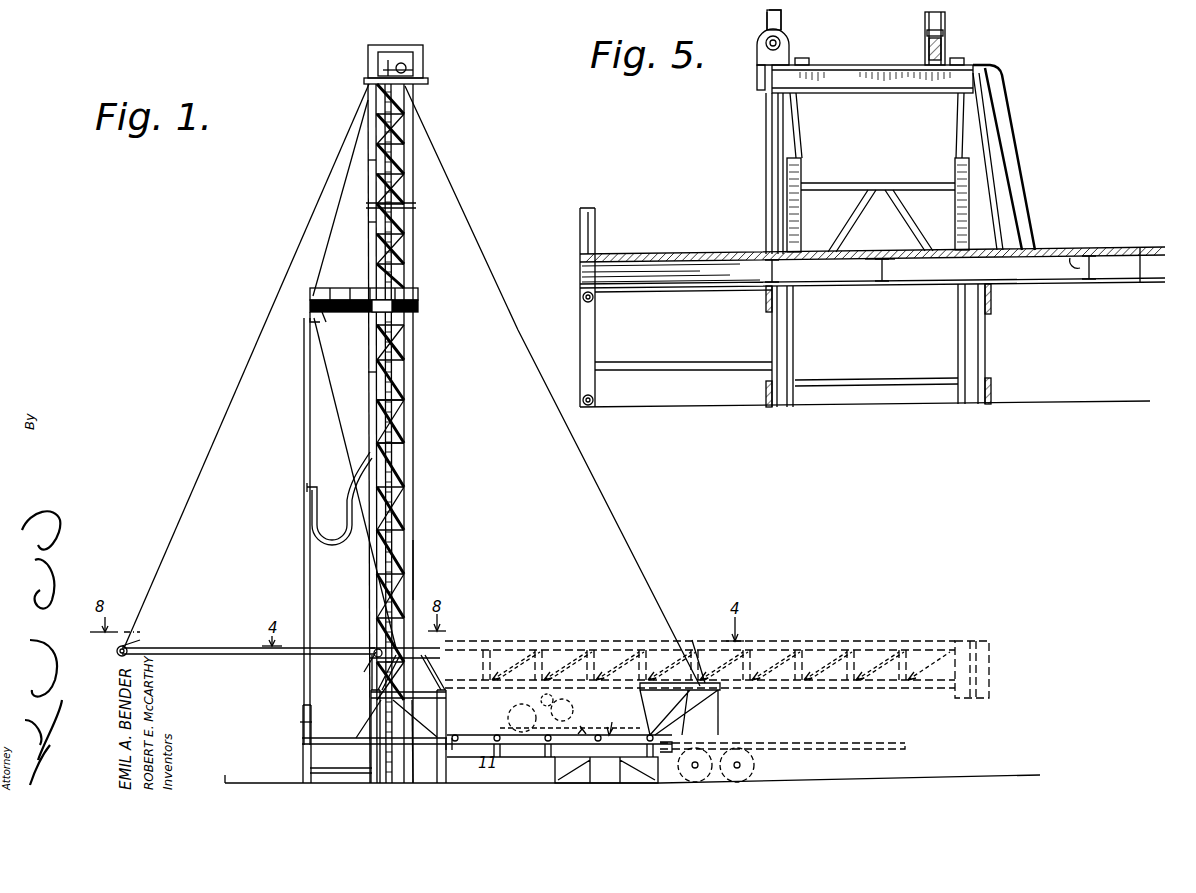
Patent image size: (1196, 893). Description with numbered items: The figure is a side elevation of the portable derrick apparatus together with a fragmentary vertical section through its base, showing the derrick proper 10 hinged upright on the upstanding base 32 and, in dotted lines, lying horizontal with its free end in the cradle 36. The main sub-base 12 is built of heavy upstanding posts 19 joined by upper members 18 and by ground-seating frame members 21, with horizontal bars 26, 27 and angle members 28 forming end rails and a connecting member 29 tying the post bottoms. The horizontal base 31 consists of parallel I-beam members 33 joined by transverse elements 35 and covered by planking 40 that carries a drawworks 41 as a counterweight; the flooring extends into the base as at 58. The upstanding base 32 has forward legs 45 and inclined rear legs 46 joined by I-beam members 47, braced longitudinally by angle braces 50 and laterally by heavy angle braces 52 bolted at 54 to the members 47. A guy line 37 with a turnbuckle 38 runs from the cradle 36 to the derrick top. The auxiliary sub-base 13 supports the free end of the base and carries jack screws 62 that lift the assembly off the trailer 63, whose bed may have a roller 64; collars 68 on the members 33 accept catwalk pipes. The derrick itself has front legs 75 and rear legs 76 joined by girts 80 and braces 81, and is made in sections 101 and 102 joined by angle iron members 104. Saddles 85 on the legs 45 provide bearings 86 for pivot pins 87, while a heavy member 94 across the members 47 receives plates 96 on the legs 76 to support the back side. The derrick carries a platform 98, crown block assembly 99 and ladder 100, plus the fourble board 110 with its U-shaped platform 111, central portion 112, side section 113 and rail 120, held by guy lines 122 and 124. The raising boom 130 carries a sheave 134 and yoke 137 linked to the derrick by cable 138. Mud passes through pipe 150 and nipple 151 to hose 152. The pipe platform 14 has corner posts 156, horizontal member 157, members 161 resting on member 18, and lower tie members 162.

In FIG. 1, the derrick proper 10 is at (428, 466).
In FIG. 1, the main sub-base 12 is at (426, 765).
In FIG. 5, the main sub-base 12 is at (996, 339).
In FIG. 1, the auxiliary sub-base 13 is at (551, 770).
In FIG. 1, the pipe platform 14 is at (345, 731).
In FIG. 5, the pipe platform 14 is at (663, 246).
In FIG. 5, the upper structural members 18 is at (765, 317).
In FIG. 1, the upstanding posts 19 is at (447, 708).
In FIG. 5, the upstanding posts 19 is at (801, 178).
In FIG. 5, the frame members 21 is at (766, 393).
In FIG. 1, the horizontal bar 26 is at (408, 692).
In FIG. 5, the horizontal bar 26 is at (874, 183).
In FIG. 1, the horizontal bar 27 is at (450, 746).
In FIG. 1, the angle members 28 is at (400, 705).
In FIG. 5, the angle members 28 is at (838, 216).
In FIG. 1, the structural connecting member 29 is at (440, 779).
In FIG. 5, the structural connecting member 29 is at (860, 382).
In FIG. 1, the horizontal base structure 31 is at (617, 720).
In FIG. 5, the horizontal base structure 31 is at (1136, 292).
In FIG. 1, the upstanding base structure 32 is at (368, 684).
In FIG. 5, the upstanding base structure 32 is at (758, 124).
In FIG. 1, the horizontal structural members 33 is at (587, 722).
In FIG. 5, the horizontal structural members 33 is at (1118, 255).
In FIG. 5, the transverse structural elements 35 is at (1078, 256).
In FIG. 1, the cradle 36 is at (700, 712).
In FIG. 1, the guy line 37 is at (640, 562).
In FIG. 1, the turnbuckle 38 is at (696, 680).
In FIG. 1, the planking 40 is at (625, 720).
In FIG. 1, the drawworks 41 is at (574, 708).
In FIG. 1, the forward legs 45 is at (370, 660).
In FIG. 5, the forward legs 45 is at (766, 148).
In FIG. 5, the rear legs 46 is at (985, 110).
In FIG. 1, the horizontal structural member 47 is at (380, 648).
In FIG. 5, the horizontal structural member 47 is at (860, 65).
In FIG. 1, the angle braces 50 is at (510, 717).
In FIG. 5, the angle braces 50 is at (1022, 170).
In FIG. 1, the angle braces 52 is at (432, 668).
In FIG. 5, the angle braces 52 is at (798, 126).
In FIG. 5, the bolted connection 54 is at (805, 60).
In FIG. 5, the flooring 58 is at (885, 259).
In FIG. 1, the jack screws 62 is at (570, 745).
In FIG. 1, the trailer 63 is at (795, 744).
In FIG. 1, the roller 64 is at (672, 748).
In FIG. 1, the collars 68 is at (601, 747).
In FIG. 1, the front legs 75 is at (370, 373).
In FIG. 5, the front legs 75 is at (767, 22).
In FIG. 1, the rear legs 76 is at (418, 566).
In FIG. 5, the rear legs 76 is at (945, 20).
In FIG. 1, the girts 80 is at (410, 406).
In FIG. 1, the braces 81 is at (410, 345).
In FIG. 5, the saddle 85 is at (757, 80).
In FIG. 1, the bearing 86 is at (373, 653).
In FIG. 5, the bearing 86 is at (757, 56).
In FIG. 5, the pivot pin 87 is at (784, 41).
In FIG. 5, the structural member 94 is at (946, 48).
In FIG. 5, the plates 96 is at (925, 32).
In FIG. 1, the platform 98 is at (425, 80).
In FIG. 1, the crown block assembly 99 is at (409, 58).
In FIG. 1, the ladder 100 is at (410, 378).
In FIG. 1, the derrick section 101 is at (372, 160).
In FIG. 1, the derrick section 102 is at (372, 222).
In FIG. 1, the angle iron members 104 is at (412, 200).
In FIG. 1, the fourble board 110 is at (326, 318).
In FIG. 1, the U-shaped platform 111 is at (312, 322).
In FIG. 1, the platform portion 112 is at (330, 289).
In FIG. 1, the side section 113 is at (418, 312).
In FIG. 1, the rail 120 is at (418, 300).
In FIG. 1, the guy lines 122 is at (326, 236).
In FIG. 1, the guy lines 124 is at (356, 420).
In FIG. 1, the raising boom 130 is at (238, 638).
In FIG. 1, the sheave 134 is at (128, 650).
In FIG. 1, the yoke 137 is at (127, 648).
In FIG. 1, the cable 138 is at (165, 570).
In FIG. 1, the pipe 150 is at (304, 546).
In FIG. 1, the nipple 151 is at (315, 485).
In FIG. 1, the hose 152 is at (330, 518).
In FIG. 1, the corner posts 156 is at (310, 706).
In FIG. 5, the corner posts 156 is at (594, 208).
In FIG. 5, the horizontal structural member 157 is at (596, 298).
In FIG. 1, the horizontal structural members 161 is at (304, 722).
In FIG. 5, the horizontal structural members 161 is at (680, 291).
In FIG. 1, the lower tie members 162 is at (352, 768).
In FIG. 5, the lower tie members 162 is at (658, 362).